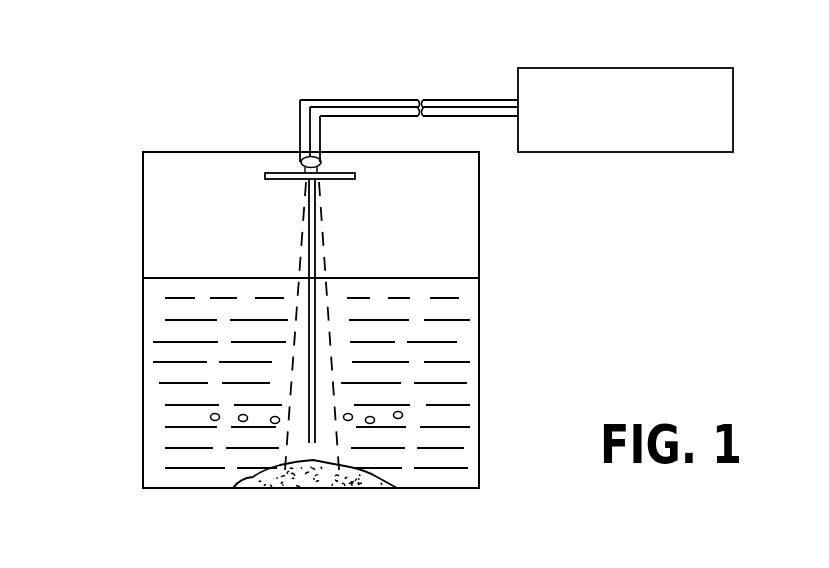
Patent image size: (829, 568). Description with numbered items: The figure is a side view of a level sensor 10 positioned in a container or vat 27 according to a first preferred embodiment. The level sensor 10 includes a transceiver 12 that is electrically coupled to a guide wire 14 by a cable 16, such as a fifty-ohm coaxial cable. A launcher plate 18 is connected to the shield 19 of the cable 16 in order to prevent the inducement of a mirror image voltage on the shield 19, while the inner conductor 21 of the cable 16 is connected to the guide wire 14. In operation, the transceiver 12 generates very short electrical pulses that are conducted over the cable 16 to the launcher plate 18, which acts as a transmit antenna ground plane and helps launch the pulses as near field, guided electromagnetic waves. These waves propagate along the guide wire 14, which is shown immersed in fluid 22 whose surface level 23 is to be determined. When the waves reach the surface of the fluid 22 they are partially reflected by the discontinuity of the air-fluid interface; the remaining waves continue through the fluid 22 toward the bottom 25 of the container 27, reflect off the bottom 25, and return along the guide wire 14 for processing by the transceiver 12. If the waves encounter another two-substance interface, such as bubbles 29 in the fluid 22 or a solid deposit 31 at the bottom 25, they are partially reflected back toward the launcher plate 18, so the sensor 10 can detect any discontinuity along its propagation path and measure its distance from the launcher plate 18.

The level sensor 10 is at (356, 74).
The transceiver 12 is at (608, 68).
The guide wire 14 is at (313, 254).
The cable 16 is at (449, 85).
The launcher plate 18 is at (281, 172).
The shield 19 is at (392, 100).
The inner conductor 21 is at (322, 108).
The fluid 22 is at (156, 352).
The surface level 23 is at (193, 278).
The bottom 25 is at (190, 486).
The container 27 is at (481, 213).
The bubbles 29 is at (402, 416).
The solid deposit 31 is at (341, 488).